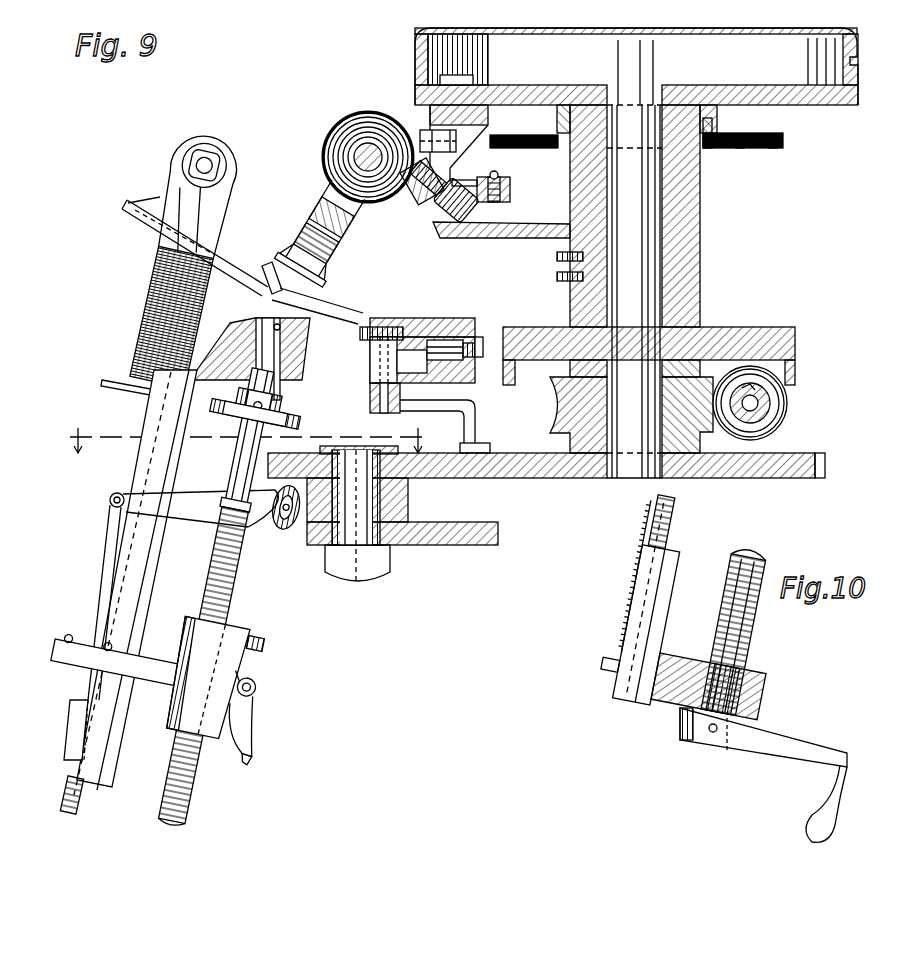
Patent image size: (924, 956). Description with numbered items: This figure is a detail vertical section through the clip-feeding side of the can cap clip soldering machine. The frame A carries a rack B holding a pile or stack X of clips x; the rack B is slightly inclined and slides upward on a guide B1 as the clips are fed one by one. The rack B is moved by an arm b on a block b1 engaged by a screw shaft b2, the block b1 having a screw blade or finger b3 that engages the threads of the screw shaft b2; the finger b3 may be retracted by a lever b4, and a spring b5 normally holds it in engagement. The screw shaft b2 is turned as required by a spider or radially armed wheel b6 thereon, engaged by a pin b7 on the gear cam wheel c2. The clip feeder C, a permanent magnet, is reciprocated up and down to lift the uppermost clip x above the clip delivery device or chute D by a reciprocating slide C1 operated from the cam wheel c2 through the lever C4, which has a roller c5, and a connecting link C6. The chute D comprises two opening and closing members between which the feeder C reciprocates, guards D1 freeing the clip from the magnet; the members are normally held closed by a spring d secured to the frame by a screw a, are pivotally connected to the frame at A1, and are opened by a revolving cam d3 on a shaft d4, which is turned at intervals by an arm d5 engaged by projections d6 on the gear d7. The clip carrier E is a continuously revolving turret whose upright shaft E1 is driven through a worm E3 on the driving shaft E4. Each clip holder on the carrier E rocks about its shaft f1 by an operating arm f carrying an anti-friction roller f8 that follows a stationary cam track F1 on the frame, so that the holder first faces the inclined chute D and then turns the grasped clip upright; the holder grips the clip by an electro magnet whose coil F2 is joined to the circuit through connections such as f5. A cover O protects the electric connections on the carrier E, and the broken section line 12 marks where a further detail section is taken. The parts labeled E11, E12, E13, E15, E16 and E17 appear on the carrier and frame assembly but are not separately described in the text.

In FIG. 9, the cover O is at (849, 57).
In FIG. 9, the clip carrier E is at (690, 140).
In FIG. 9, the upright shaft E1 is at (636, 259).
In FIG. 9, the bar E15 is at (783, 135).
In FIG. 9, the bar portion E17 is at (745, 150).
In FIG. 9, the bar portion E16 is at (773, 150).
In FIG. 9, the bracket E13 is at (452, 178).
In FIG. 9, the block E11 is at (510, 192).
In FIG. 9, the operating arm f is at (430, 200).
In FIG. 9, the anti-friction roller f8 is at (468, 213).
In FIG. 9, the connection f5 is at (418, 135).
In FIG. 9, the axis or shaft f1 is at (357, 147).
In FIG. 9, the coil F2 is at (338, 150).
In FIG. 9, the stationary cam track F1 is at (318, 283).
In FIG. 9, the clip x is at (272, 264).
In FIG. 9, the clip delivery device D is at (140, 226).
In FIG. 9, the guards D1 is at (158, 207).
In FIG. 9, the frame A is at (700, 299).
In FIG. 9, the bearing block E12 is at (553, 405).
In FIG. 9, the worm E3 is at (788, 403).
In FIG. 9, the driving shaft E4 is at (777, 413).
In FIG. 9, the gear d7 is at (540, 478).
In FIG. 9, the pivot connection A1 is at (493, 547).
In FIG. 9, the gear cam wheel c2 is at (312, 462).
In FIG. 9, the projections d6 is at (490, 448).
In FIG. 9, the arm d5 is at (480, 405).
In FIG. 9, the spring d is at (476, 335).
In FIG. 9, the screw a is at (485, 342).
In FIG. 9, the revolving cam d3 is at (375, 335).
In FIG. 9, the shaft d4 is at (378, 395).
In FIG. 9, the section line 12— 12 is at (246, 440).
In FIG. 9, the spider or radially armed wheel b6 is at (285, 396).
In FIG. 9, the screw shaft b2 is at (240, 580).
In FIG. 10, the screw shaft b2 is at (762, 560).
In FIG. 9, the pin b7 is at (290, 450).
In FIG. 9, the block b1 is at (245, 620).
In FIG. 9, the arm b is at (143, 658).
In FIG. 9, the screw blade or finger b3 is at (270, 645).
In FIG. 9, the lever b4 is at (250, 752).
In FIG. 9, the spring b5 is at (243, 757).
In FIG. 9, the roller c5 is at (287, 522).
In FIG. 9, the lever C4 is at (197, 497).
In FIG. 9, the clip feeder C is at (205, 128).
In FIG. 9, the pile or stack of clips X is at (155, 305).
In FIG. 9, the rack B is at (160, 393).
In FIG. 9, the guide B1 is at (150, 597).
In FIG. 10, the guide B1 is at (680, 550).
In FIG. 9, the reciprocating slide C1 is at (140, 466).
In FIG. 10, the reciprocating slide C1 is at (640, 520).
In FIG. 9, the connecting link C6 is at (102, 575).